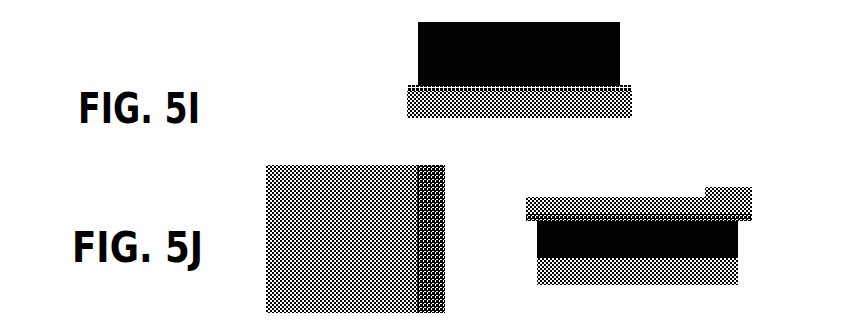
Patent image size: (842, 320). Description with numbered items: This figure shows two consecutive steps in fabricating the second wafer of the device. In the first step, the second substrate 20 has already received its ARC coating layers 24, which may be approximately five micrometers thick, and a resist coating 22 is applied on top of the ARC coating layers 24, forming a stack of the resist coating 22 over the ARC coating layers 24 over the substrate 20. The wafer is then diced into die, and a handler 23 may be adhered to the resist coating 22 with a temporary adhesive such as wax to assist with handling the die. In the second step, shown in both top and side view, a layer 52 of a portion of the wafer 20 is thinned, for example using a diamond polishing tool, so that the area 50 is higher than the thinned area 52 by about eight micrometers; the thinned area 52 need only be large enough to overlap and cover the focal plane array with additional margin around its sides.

In FIG. 5I, the second substrate 20 is at (632, 107).
In FIG. 5I, the resist coating 22 is at (620, 58).
In FIG. 5J, the resist coating 22 is at (738, 248).
In FIG. 5J, the handler 23 is at (714, 268).
In FIG. 5I, the ARC coating layers 24 is at (630, 88).
In FIG. 5J, the area 50 is at (422, 205).
In FIG. 5J, the thinned area 52 is at (297, 183).